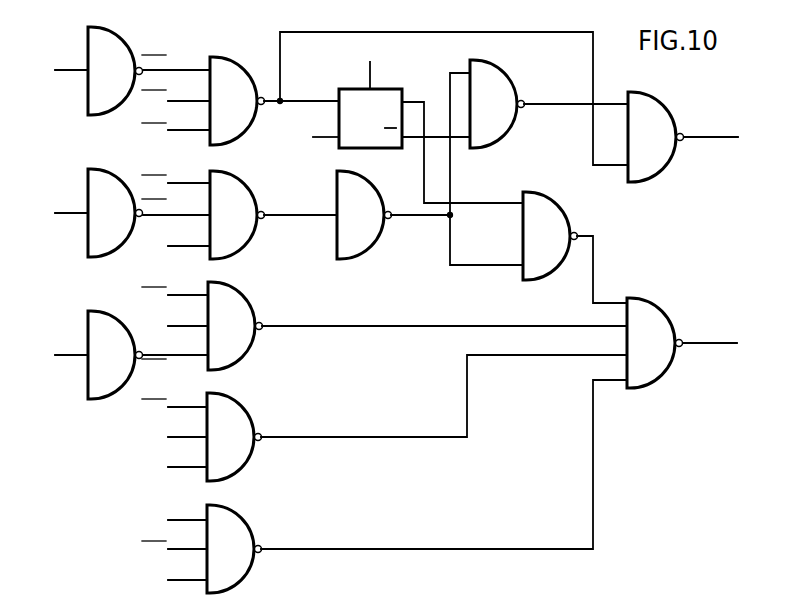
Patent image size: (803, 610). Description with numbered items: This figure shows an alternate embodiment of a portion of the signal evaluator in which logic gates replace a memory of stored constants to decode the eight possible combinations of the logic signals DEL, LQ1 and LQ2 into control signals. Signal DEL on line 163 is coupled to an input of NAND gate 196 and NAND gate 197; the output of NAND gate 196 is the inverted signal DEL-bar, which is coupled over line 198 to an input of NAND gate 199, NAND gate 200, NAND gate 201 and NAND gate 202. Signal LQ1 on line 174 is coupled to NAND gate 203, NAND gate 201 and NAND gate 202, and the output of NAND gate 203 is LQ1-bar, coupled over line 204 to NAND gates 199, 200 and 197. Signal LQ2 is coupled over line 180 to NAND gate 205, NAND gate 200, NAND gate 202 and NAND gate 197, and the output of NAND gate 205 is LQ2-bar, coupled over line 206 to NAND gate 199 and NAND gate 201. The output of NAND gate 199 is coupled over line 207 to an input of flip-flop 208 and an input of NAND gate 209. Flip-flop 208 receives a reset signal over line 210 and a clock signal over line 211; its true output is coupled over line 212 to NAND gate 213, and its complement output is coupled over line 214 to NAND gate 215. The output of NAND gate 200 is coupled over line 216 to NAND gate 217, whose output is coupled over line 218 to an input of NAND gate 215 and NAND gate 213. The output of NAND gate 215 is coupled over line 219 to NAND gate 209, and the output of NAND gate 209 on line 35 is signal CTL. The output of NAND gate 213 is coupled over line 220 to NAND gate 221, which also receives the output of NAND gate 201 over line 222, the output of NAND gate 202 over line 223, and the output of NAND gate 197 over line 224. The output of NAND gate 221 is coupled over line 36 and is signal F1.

The line 35 is at (704, 136).
The line 36 is at (704, 342).
The line 163 is at (75, 68).
The line 174 is at (75, 212).
The line 180 is at (75, 354).
The NAND gate 196 is at (117, 40).
The NAND gate 197 is at (243, 518).
The line 198 is at (189, 69).
The NAND gate 199 is at (225, 63).
The NAND gate 200 is at (227, 178).
The NAND gate 201 is at (230, 290).
The NAND gate 202 is at (245, 406).
The NAND gate 203 is at (93, 168).
The line 204 is at (201, 100).
The NAND gate 205 is at (91, 310).
The line 206 is at (201, 129).
The line 207 is at (268, 105).
The flip-flop 208 is at (338, 88).
The NAND gate 209 is at (652, 98).
The line 210 is at (371, 77).
The line 211 is at (322, 139).
The line 212 is at (417, 102).
The NAND gate 213 is at (549, 196).
The line 214 is at (410, 146).
The NAND gate 215 is at (497, 66).
The line 216 is at (313, 218).
The NAND gate 217 is at (353, 261).
The line 218 is at (474, 268).
The line 219 is at (540, 102).
The line 220 is at (596, 253).
The NAND gate 221 is at (650, 306).
The line 222 is at (373, 330).
The line 223 is at (373, 440).
The line 224 is at (373, 552).